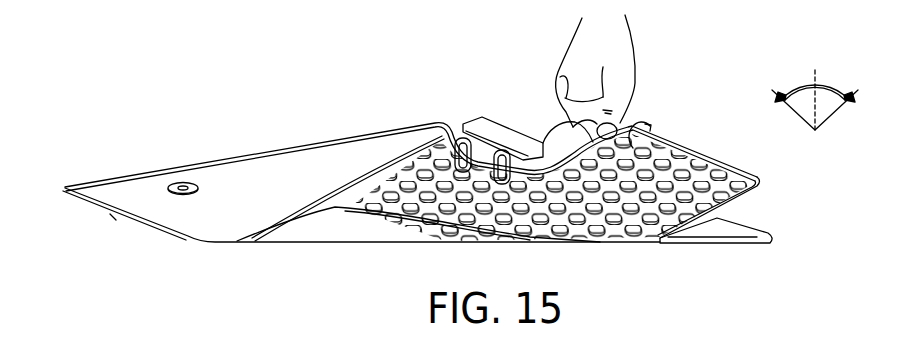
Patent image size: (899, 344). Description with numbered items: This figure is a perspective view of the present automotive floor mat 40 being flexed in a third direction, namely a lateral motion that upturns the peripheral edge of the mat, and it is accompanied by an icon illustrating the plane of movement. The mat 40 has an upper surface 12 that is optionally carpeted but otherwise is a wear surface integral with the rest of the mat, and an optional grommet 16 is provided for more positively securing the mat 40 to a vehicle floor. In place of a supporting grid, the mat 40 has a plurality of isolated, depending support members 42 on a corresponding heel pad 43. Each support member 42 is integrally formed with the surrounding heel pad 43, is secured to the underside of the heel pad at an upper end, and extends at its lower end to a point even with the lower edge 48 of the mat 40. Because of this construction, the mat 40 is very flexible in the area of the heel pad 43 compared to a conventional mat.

The upper surface 12 is at (292, 172).
The grommet 16 is at (183, 186).
The automotive floor mat 40 is at (366, 105).
The support members 42 is at (633, 203).
The heel pad 43 is at (457, 243).
The lower edge 48 is at (323, 227).